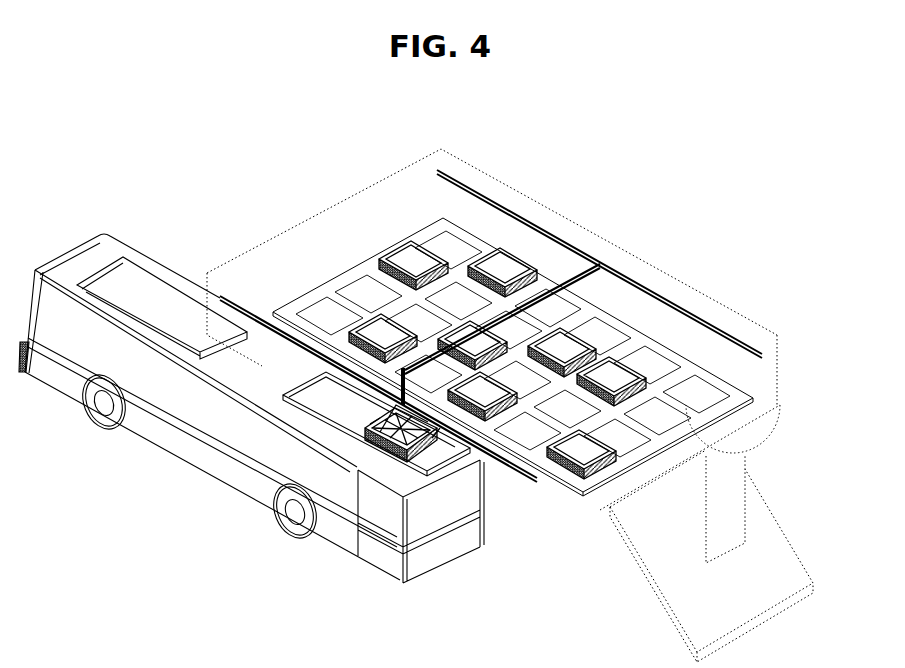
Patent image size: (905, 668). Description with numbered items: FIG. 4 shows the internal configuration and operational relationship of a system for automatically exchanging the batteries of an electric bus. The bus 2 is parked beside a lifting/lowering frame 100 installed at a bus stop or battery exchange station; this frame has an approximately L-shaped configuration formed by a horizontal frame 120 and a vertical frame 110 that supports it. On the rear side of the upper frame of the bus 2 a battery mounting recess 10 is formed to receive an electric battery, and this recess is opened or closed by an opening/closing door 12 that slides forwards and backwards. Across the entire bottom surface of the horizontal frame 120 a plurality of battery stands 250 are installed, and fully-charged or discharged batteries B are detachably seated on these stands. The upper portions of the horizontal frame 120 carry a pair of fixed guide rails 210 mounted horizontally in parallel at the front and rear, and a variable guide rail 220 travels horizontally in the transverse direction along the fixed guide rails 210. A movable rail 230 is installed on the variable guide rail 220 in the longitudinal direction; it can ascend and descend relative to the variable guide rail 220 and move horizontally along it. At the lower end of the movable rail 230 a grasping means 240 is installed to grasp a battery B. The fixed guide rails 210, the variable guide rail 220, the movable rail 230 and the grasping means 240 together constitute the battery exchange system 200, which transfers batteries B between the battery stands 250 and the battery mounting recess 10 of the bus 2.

The bus 2 is at (242, 490).
The battery mounting recess 10 is at (359, 478).
The opening/closing door 12 is at (338, 392).
The lifting/lowering frame 100 is at (780, 378).
The vertical frame 110 is at (743, 505).
The horizontal frame 120 is at (315, 218).
The battery exchange system 200 is at (638, 275).
The fixed guide rails 210 is at (692, 313).
The variable guide rail 220 is at (563, 283).
The movable rail 230 is at (430, 447).
The grasping means 240 is at (415, 462).
The battery stands 250 is at (767, 433).
The battery B is at (580, 482).